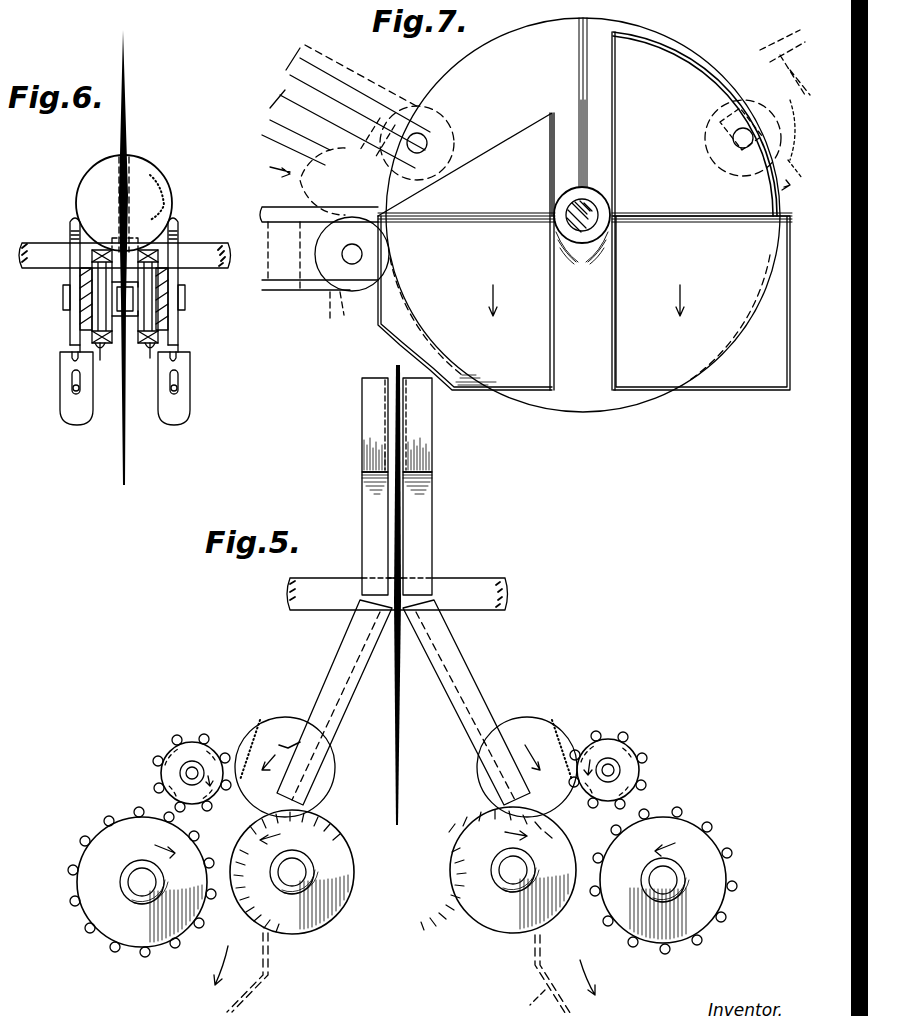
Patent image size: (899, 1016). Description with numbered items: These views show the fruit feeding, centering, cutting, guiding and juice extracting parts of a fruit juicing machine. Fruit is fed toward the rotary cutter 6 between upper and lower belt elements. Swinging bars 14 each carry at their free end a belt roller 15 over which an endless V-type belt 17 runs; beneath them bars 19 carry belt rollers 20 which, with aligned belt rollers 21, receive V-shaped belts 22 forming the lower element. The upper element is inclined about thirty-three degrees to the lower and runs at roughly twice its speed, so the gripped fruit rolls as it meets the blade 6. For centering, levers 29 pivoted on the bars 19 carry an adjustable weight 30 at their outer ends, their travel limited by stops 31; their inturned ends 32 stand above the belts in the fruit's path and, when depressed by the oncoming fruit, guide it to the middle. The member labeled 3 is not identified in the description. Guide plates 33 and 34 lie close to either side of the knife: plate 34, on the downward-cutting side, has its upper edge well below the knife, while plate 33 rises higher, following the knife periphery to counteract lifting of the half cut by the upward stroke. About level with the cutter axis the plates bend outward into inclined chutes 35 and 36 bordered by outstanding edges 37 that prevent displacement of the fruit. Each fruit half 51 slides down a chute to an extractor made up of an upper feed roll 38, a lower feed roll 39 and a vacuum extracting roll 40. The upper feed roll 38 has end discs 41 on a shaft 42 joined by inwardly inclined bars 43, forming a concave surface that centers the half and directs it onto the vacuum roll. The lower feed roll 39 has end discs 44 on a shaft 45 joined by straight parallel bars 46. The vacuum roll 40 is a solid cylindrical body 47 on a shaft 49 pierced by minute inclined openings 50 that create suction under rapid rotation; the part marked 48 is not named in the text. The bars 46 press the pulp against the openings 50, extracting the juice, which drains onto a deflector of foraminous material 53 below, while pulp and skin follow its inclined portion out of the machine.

In FIG. 6, the horizontal rod 3 is at (222, 272).
In FIG. 7, the horizontal rod 3 is at (565, 222).
In FIG. 5, the horizontal rod 3 is at (397, 594).
In FIG. 6, the cutter 6 is at (122, 462).
In FIG. 7, the cutter 6 is at (614, 395).
In FIG. 5, the cutter 6 is at (416, 768).
In FIG. 7, the bars 14 is at (526, 167).
In FIG. 7, the belt roller 15 is at (450, 132).
In FIG. 7, the endless belt 17 is at (385, 78).
In FIG. 6, the bars 19 is at (82, 279).
In FIG. 7, the bars 19 is at (310, 290).
In FIG. 7, the belt rollers 20 is at (398, 262).
In FIG. 6, the belt rollers 21 is at (96, 318).
In FIG. 6, the endless V-shaped belts 22 is at (102, 362).
In FIG. 7, the endless V-shaped belts 22 is at (342, 311).
In FIG. 6, the levers 29 is at (75, 328).
In FIG. 6, the adjustable weight 30 is at (70, 413).
In FIG. 6, the stops 31 is at (65, 300).
In FIG. 6, the inturned ends 32 is at (84, 205).
In FIG. 7, the guide plate 33 is at (640, 132).
In FIG. 5, the guide plate 33 is at (372, 378).
In FIG. 7, the guide plate 34 is at (465, 303).
In FIG. 5, the guide plate 34 is at (372, 497).
In FIG. 7, the inclined chute 35 is at (640, 303).
In FIG. 5, the inclined chute 35 is at (475, 680).
In FIG. 5, the inclined chute 36 is at (330, 680).
In FIG. 7, the outstanding edges 37 is at (466, 251).
In FIG. 5, the outstanding edges 37 is at (370, 533).
In FIG. 5, the upper feed roll 38 is at (225, 745).
In FIG. 5, the lower feed roll 39 is at (712, 845).
In FIG. 5, the vacuum extracting roll 40 is at (318, 930).
In FIG. 5, the end discs 41 is at (162, 773).
In FIG. 5, the shaft 42 is at (188, 760).
In FIG. 5, the bars 43 is at (160, 745).
In FIG. 5, the end discs 44 is at (90, 855).
In FIG. 5, the shaft 45 is at (130, 892).
In FIG. 5, the spaced parallel bars 46 is at (110, 945).
In FIG. 5, the solid cylindrical body 47 is at (345, 906).
In FIG. 5, the roller surface 48 is at (480, 820).
In FIG. 5, the shaft 49 is at (280, 880).
In FIG. 5, the openings 50 is at (372, 842).
In FIG. 5, the fruit half 51 is at (280, 718).
In FIG. 5, the foraminous material 53 is at (404, 974).